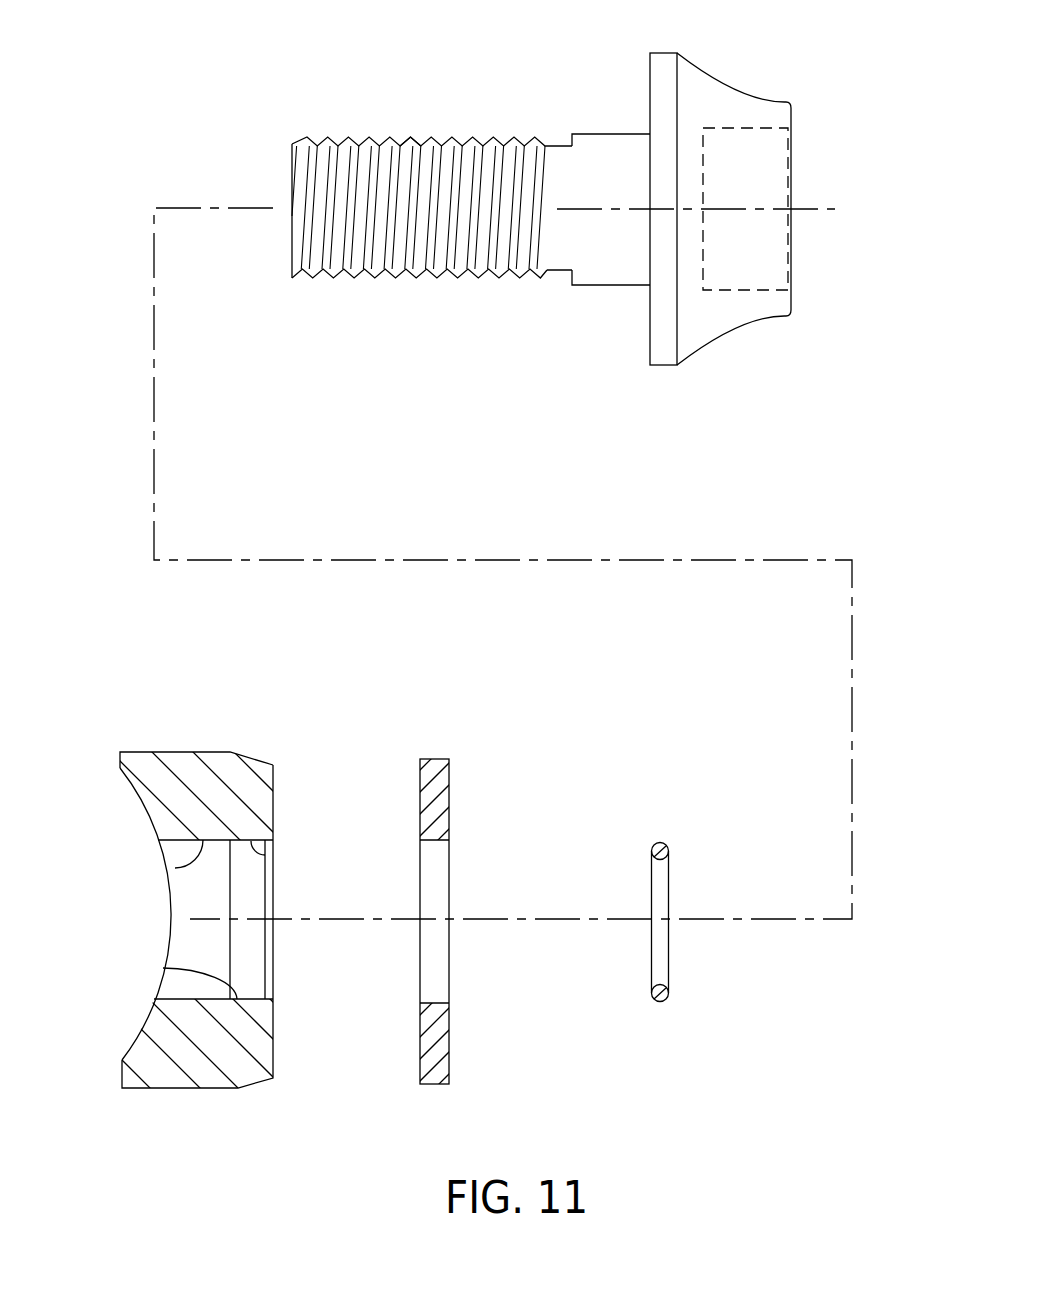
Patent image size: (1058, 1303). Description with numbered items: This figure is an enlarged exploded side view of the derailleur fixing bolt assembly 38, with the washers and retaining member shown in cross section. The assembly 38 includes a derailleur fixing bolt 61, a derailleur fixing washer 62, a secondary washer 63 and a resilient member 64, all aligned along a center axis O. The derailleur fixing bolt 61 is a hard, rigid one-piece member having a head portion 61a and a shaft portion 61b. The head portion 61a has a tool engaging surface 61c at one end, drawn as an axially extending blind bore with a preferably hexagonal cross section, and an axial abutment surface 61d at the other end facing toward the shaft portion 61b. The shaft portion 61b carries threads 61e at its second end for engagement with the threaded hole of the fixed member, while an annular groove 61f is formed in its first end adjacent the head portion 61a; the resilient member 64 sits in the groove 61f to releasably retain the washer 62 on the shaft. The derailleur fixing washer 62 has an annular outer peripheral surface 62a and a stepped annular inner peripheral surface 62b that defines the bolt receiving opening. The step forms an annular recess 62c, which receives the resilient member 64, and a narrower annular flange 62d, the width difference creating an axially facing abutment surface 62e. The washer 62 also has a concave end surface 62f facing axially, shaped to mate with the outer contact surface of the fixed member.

The derailleur fixing bolt assembly 38 is at (158, 113).
The center axis O is at (245, 207).
The derailleur fixing bolt 61 is at (569, 204).
The head portion 61a is at (723, 313).
The shaft portion 61b is at (392, 279).
The tool engaging surface 61c is at (764, 290).
The axial abutment surface 61d is at (648, 347).
The threads 61e is at (407, 146).
The annular groove 61f is at (557, 275).
The derailleur fixing washer 62 is at (211, 911).
The annular outer peripheral surface 62a is at (165, 750).
The annular inner peripheral surface 62b is at (245, 897).
The annular recess 62c is at (176, 869).
The annular flange 62d is at (274, 852).
The axially facing abutment surface 62e is at (176, 962).
The concave end surface 62f is at (128, 1044).
The secondary washer 63 is at (441, 752).
The resilient member 64 is at (669, 837).